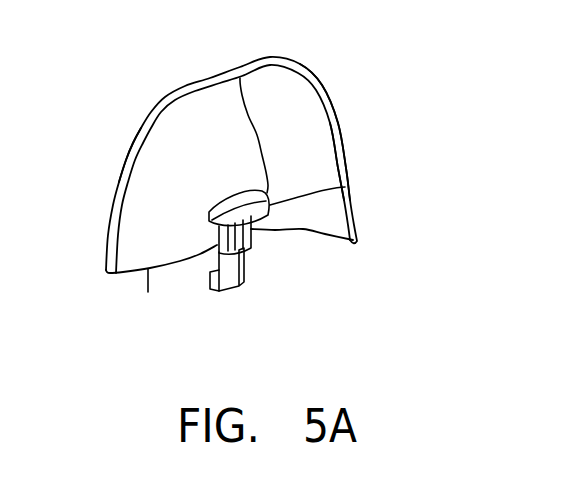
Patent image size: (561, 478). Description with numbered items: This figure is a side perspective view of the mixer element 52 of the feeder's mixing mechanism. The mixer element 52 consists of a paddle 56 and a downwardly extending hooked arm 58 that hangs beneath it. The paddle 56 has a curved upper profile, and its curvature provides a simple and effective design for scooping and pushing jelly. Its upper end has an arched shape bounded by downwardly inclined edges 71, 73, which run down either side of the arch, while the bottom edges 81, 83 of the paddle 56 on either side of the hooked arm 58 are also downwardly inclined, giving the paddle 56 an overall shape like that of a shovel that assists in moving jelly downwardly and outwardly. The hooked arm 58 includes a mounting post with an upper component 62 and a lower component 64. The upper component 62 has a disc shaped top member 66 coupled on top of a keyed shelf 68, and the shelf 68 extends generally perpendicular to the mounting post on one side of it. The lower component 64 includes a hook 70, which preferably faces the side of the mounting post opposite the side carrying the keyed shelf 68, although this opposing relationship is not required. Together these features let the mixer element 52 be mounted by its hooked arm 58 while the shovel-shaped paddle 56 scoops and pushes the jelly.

The mixer element 52 is at (355, 82).
The paddle 56 is at (305, 147).
The hooked arm 58 is at (268, 217).
The upper component 62 is at (345, 187).
The lower component 64 is at (211, 289).
The disc shaped top member 66 is at (240, 78).
The keyed shelf 68 is at (248, 273).
The hook 70 is at (210, 270).
The downwardly inclined edge 71 is at (128, 172).
The downwardly inclined edge 73 is at (338, 125).
The bottom edge 81 is at (148, 292).
The bottom edge 83 is at (323, 236).